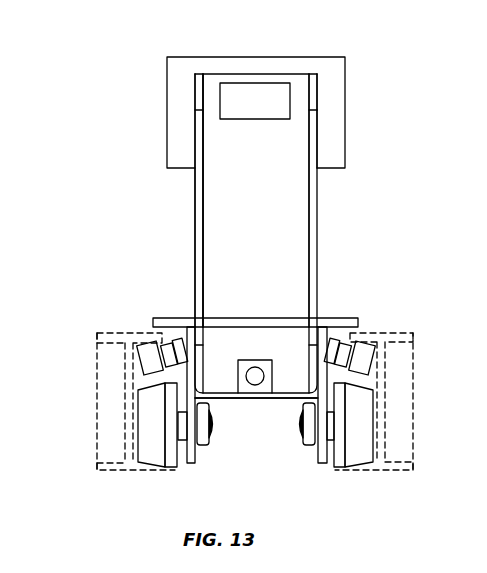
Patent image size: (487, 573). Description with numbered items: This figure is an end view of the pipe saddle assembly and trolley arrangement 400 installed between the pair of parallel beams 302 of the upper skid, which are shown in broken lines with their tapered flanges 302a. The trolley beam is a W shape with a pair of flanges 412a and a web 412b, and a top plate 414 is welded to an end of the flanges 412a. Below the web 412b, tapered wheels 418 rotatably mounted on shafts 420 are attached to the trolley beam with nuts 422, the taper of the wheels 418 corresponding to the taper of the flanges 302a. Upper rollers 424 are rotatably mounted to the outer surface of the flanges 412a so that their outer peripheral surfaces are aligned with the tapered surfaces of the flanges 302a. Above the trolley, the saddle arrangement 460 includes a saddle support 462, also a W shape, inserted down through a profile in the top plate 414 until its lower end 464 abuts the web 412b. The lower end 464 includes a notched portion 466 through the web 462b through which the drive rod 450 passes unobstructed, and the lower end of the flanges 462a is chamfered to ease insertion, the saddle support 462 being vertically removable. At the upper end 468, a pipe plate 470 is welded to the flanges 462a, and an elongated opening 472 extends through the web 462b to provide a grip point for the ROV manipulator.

The parallel beam 302 is at (388, 333).
The flange 302a is at (98, 330).
The pipe saddle assembly and trolley arrangement 400 is at (418, 205).
The flange 412a is at (190, 327).
The web 412b is at (273, 397).
The top plate 414 is at (332, 318).
The tapered wheel 418 is at (150, 403).
The shaft 420 is at (178, 440).
The nut 422 is at (305, 447).
The upper roller 424 is at (335, 350).
The drive rod 450 is at (246, 383).
The saddle arrangement 460 is at (188, 224).
The saddle support 462 is at (318, 203).
The flange 462a is at (320, 88).
The web 462b is at (240, 163).
The lower end 464 is at (302, 378).
The notched portion 466 is at (257, 340).
The upper end 468 is at (320, 133).
The pipe plate 470 is at (173, 57).
The elongated opening 472 is at (257, 83).